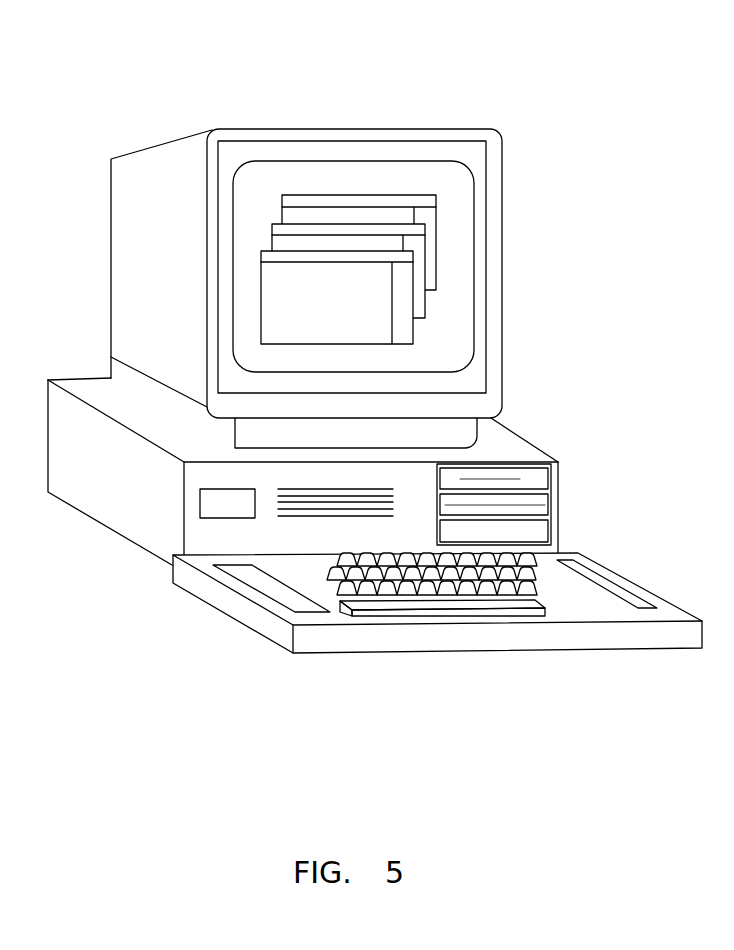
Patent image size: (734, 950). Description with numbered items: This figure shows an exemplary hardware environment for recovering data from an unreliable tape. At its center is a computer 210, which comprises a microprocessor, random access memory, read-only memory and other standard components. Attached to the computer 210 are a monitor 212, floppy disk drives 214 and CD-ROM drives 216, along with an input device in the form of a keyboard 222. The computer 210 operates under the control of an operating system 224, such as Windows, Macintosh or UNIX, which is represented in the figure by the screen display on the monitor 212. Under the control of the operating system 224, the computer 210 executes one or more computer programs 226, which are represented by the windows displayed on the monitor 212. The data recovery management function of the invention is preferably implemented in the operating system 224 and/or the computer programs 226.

The computer 210 is at (525, 438).
The monitor 212 is at (382, 128).
The floppy disk drives 214 is at (541, 503).
The CD-ROM drives 216 is at (540, 535).
The keyboard 222 is at (622, 637).
The operating system 224 is at (262, 182).
The computer programs 226 is at (458, 282).